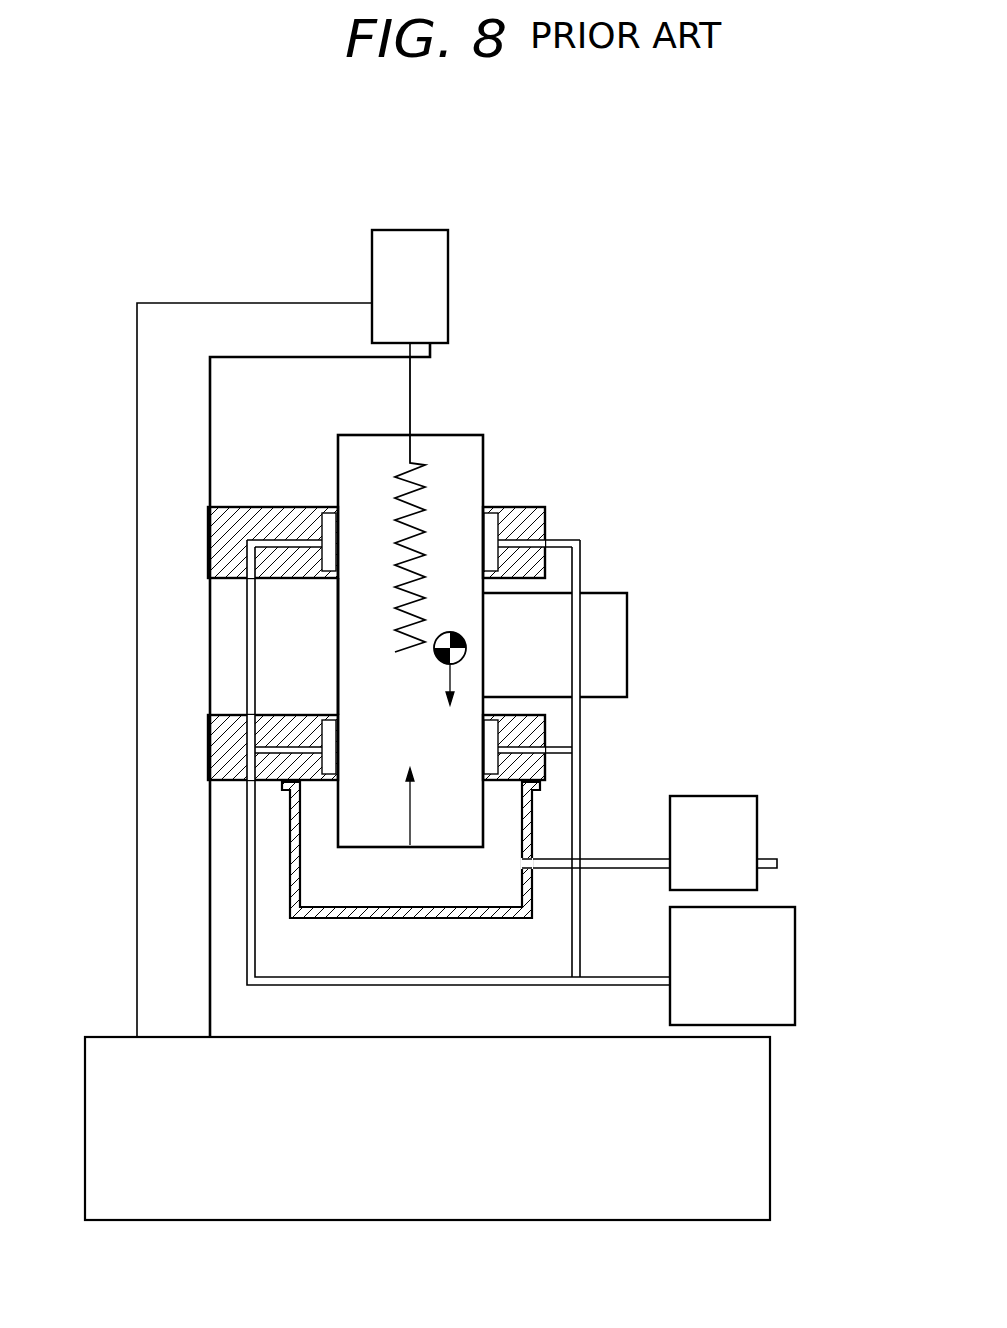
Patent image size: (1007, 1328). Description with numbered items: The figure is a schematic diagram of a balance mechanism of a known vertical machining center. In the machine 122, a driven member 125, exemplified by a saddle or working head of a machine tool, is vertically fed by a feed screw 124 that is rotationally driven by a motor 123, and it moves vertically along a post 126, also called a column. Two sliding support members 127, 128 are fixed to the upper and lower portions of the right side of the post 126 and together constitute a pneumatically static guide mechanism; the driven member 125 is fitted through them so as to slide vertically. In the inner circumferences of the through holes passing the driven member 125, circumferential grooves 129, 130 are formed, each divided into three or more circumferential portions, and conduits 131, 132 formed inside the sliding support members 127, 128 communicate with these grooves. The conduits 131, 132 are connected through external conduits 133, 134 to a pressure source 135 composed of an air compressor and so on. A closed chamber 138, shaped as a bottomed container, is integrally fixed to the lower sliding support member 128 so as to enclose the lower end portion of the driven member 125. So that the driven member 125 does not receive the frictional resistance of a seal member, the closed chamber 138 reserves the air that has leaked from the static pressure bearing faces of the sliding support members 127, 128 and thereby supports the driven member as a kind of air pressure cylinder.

The machine 122 is at (583, 263).
The motor 123 is at (423, 243).
The feed screw 124 is at (395, 490).
The driven member 125 is at (462, 440).
The post 126 is at (148, 910).
The sliding support member 127 is at (222, 518).
The sliding support member 128 is at (222, 722).
The circumferential groove 129 is at (342, 562).
The circumferential groove 130 is at (324, 766).
The conduit 131 is at (290, 540).
The conduit 132 is at (290, 746).
The external conduit 133 is at (247, 630).
The external conduit 134 is at (582, 545).
The pressure source 135 is at (795, 918).
The closed chamber 138 is at (365, 918).